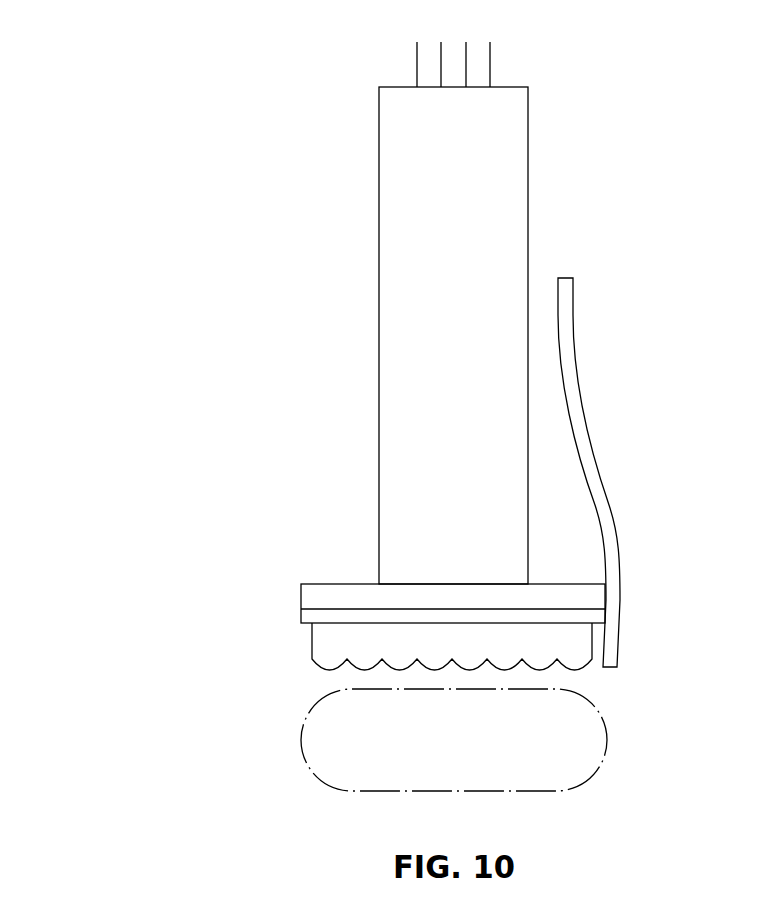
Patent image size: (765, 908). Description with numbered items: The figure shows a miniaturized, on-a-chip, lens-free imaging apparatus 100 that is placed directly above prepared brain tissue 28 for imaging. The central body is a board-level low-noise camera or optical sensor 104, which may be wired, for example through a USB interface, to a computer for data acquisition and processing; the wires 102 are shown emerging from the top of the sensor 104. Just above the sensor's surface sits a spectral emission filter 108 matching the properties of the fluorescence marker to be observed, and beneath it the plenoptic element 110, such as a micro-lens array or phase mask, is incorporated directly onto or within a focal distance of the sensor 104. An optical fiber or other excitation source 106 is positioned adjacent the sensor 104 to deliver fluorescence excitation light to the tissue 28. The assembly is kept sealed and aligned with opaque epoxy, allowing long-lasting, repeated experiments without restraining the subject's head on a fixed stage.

The lens-free imaging apparatus 100 is at (182, 84).
The wires 102 is at (415, 56).
The optical sensor 104 is at (528, 205).
The excitation source 106 is at (601, 512).
The spectral emission filter 108 is at (301, 618).
The plenoptic element 110 is at (311, 660).
The tissue 28 is at (340, 793).